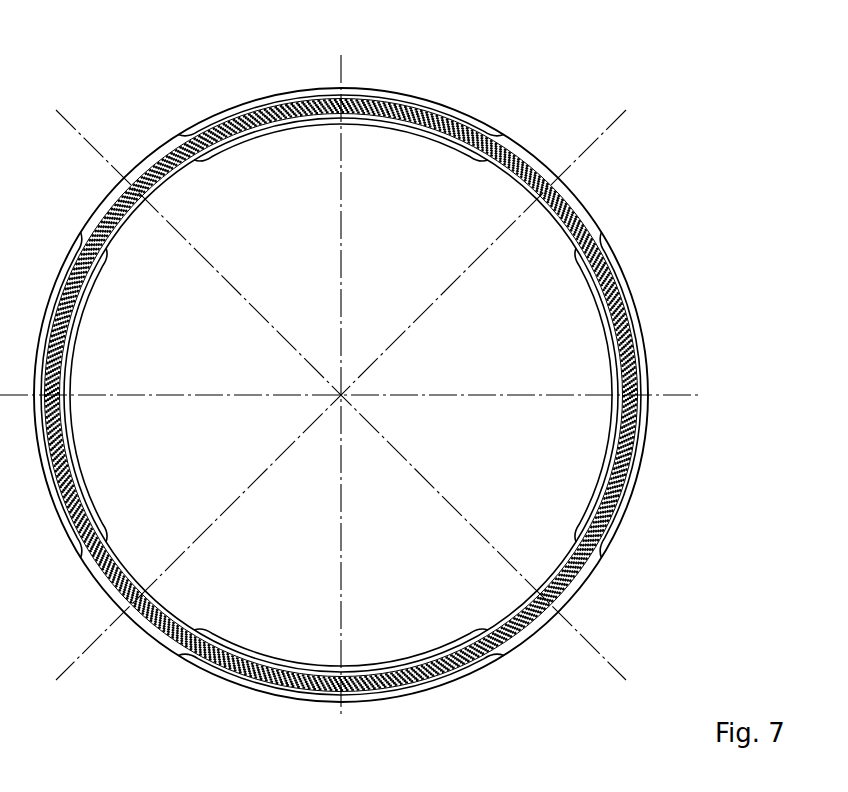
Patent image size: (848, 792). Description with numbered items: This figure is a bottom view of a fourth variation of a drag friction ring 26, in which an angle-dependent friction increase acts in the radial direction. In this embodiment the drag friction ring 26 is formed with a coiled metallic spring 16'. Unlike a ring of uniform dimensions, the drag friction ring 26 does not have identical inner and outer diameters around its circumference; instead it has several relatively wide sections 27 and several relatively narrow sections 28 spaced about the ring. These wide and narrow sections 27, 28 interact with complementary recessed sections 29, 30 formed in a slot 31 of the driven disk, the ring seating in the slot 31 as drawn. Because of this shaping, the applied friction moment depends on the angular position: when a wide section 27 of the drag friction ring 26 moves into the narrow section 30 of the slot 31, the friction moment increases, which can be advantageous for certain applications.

The coiled metallic spring 16' is at (340, 707).
The drag friction ring 26 is at (585, 575).
The wide section 27 is at (101, 192).
The narrow section 28 is at (450, 102).
The recessed section 29 is at (183, 123).
The narrow section of the slot 30 is at (355, 87).
The slot 31 is at (617, 241).